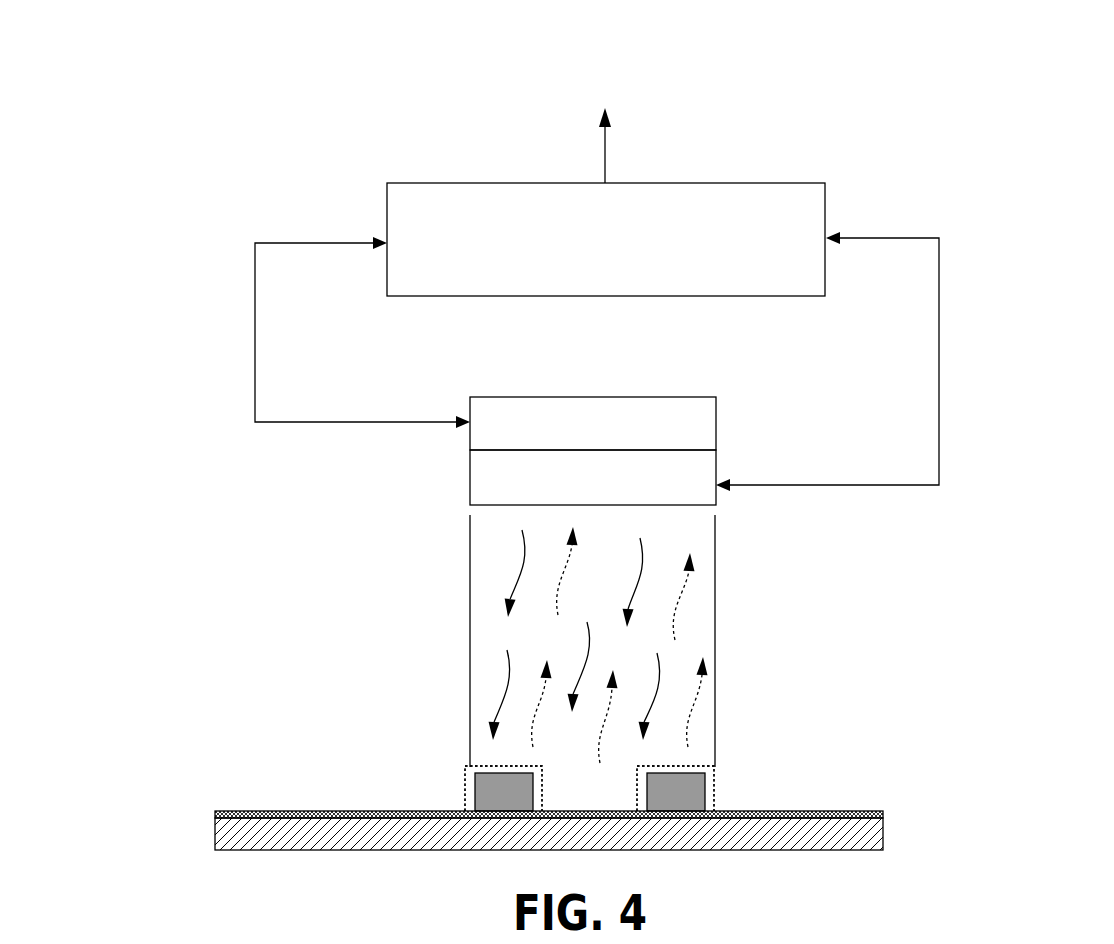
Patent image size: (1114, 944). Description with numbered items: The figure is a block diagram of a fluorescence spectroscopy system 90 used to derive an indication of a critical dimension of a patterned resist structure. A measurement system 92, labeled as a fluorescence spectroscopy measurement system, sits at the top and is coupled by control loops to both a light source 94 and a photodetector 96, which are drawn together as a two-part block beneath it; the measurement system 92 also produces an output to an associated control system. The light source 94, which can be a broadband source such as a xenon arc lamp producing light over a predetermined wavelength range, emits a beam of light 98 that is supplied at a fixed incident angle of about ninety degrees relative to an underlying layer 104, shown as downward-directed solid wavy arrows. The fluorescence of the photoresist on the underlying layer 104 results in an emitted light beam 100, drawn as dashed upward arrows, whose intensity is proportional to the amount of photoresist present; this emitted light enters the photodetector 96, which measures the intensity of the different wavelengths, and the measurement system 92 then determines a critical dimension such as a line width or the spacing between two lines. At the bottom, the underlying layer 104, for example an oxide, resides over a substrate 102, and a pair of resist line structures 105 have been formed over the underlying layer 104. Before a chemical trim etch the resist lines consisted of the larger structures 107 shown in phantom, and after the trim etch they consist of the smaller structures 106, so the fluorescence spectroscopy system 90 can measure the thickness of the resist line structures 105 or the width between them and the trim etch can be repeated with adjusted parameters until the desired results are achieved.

The fluorescence spectroscopy system 90 is at (1030, 167).
The measurement system 92 is at (690, 183).
The light source 94 is at (470, 476).
The photodetector 96 is at (718, 410).
The beam of light 98 is at (470, 615).
The emitted light beam 100 is at (716, 595).
The substrate 102 is at (883, 836).
The underlying layer 104 is at (883, 811).
The resist line structures 105 is at (444, 760).
The structures after chemical trim etch 106 is at (475, 805).
The structures prior to chemical trim etch 107 is at (543, 782).